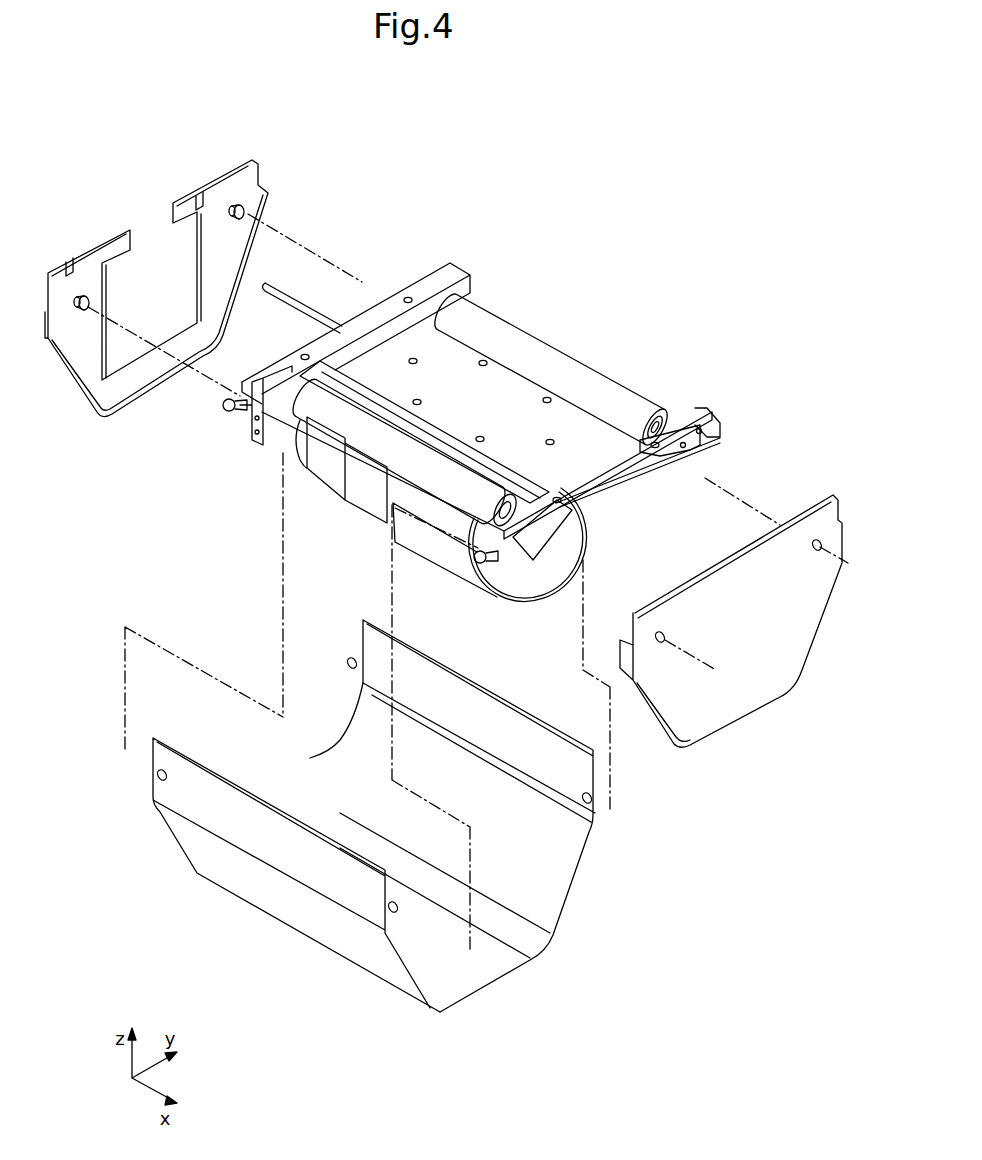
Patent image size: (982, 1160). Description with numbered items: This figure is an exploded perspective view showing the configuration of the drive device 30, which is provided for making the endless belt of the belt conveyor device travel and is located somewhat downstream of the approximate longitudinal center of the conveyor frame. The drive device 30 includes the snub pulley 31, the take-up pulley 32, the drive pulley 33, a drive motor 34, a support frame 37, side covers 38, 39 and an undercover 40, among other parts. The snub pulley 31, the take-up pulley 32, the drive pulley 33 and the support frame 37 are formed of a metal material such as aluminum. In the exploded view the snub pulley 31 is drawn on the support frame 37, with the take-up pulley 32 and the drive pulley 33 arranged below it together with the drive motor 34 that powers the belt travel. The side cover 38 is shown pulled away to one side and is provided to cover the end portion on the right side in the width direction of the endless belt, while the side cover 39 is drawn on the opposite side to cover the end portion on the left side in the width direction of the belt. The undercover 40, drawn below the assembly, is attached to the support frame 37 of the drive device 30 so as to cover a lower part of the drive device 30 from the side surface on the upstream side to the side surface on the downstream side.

The drive device 30 is at (501, 400).
The snub pulley 31 is at (535, 347).
The take-up pulley 32 is at (380, 440).
The drive pulley 33 is at (442, 555).
The drive motor 34 is at (335, 468).
The support frame 37 is at (580, 458).
The side cover 38 is at (137, 377).
The side cover 39 is at (752, 687).
The undercover 40 is at (298, 918).